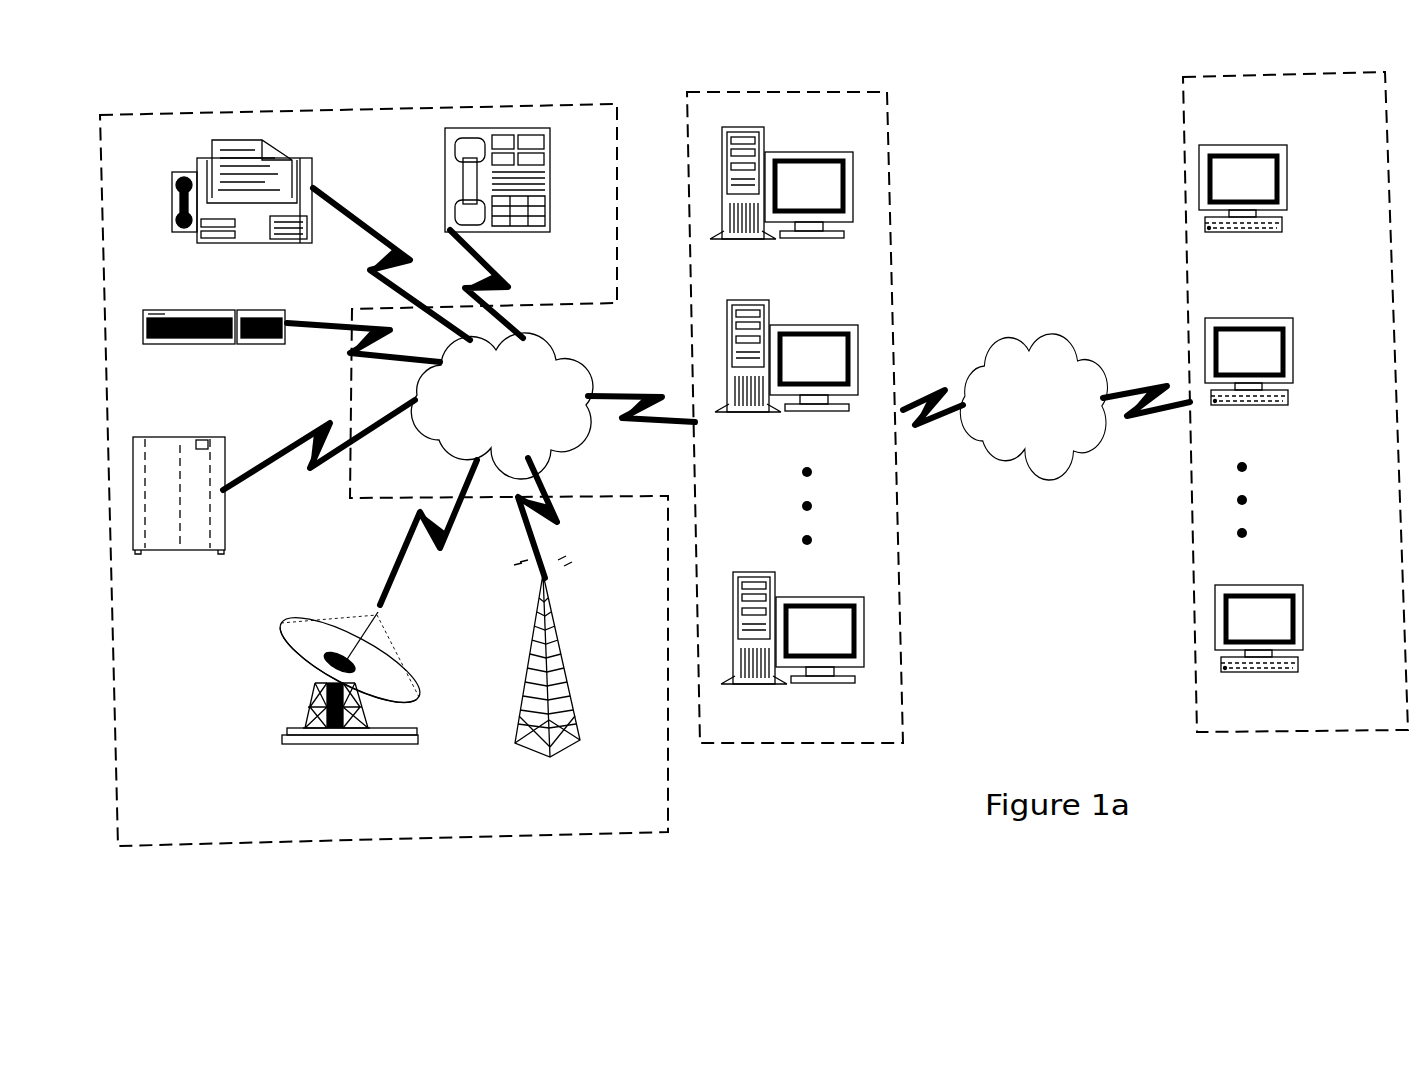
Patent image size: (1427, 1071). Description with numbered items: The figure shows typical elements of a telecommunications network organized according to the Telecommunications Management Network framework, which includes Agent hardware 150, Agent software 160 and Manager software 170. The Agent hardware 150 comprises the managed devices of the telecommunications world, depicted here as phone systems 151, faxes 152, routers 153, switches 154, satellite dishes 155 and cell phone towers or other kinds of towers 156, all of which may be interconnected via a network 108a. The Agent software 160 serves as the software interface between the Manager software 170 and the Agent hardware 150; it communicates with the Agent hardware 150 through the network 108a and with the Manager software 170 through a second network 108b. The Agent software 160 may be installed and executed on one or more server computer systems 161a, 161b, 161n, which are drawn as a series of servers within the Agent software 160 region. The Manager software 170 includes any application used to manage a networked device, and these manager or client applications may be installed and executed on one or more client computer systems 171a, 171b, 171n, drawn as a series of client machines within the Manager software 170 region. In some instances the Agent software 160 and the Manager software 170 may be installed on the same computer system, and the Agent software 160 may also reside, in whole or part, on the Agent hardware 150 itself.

The Agent hardware 150 is at (367, 105).
The phone systems 151 is at (470, 233).
The faxes 152 is at (180, 233).
The routers 153 is at (150, 343).
The switches 154 is at (140, 551).
The satellite dishes 155 is at (283, 745).
The towers 156 is at (516, 743).
The network 108a is at (526, 424).
The network 108b is at (1009, 425).
The Agent software 160 is at (803, 92).
The server computer system 161a is at (712, 240).
The server computer system 161b is at (715, 410).
The server computer system 161n is at (723, 685).
The Manager software 170 is at (1300, 73).
The client computer system 171a is at (1214, 232).
The client computer system 171b is at (1218, 405).
The client computer system 171n is at (1228, 672).